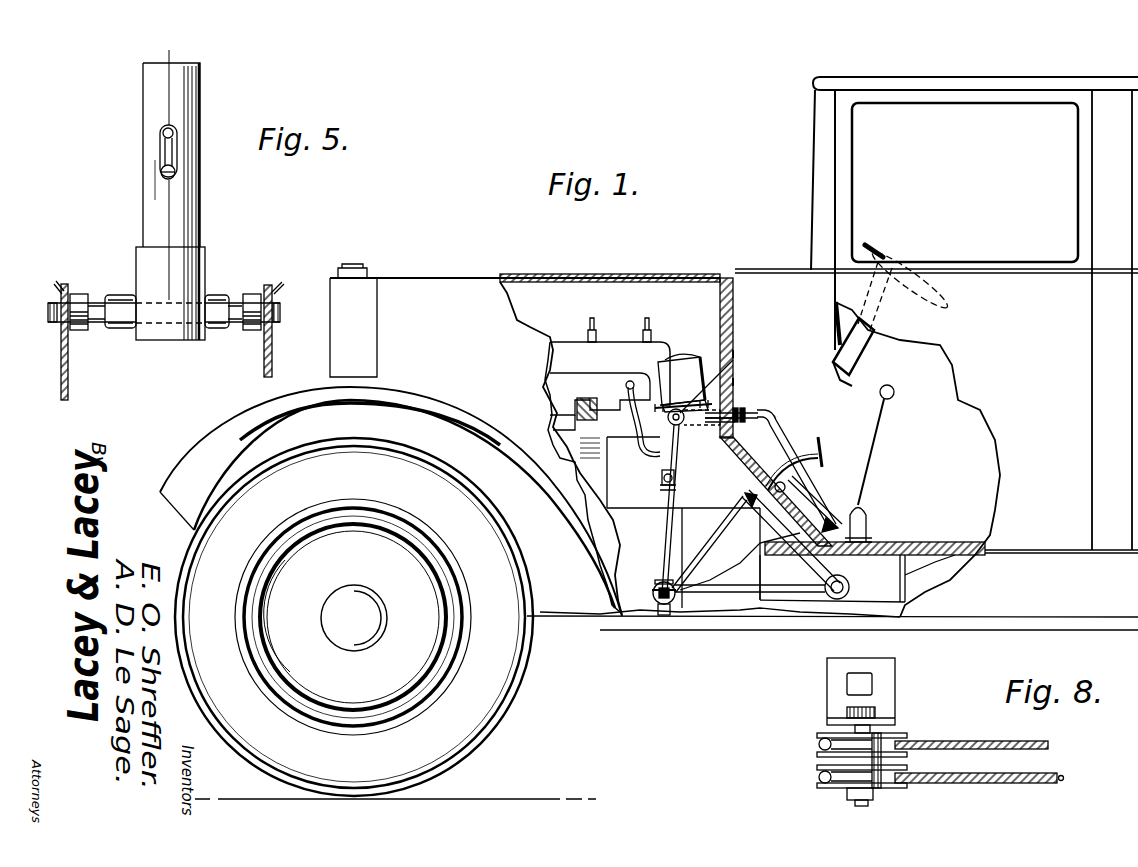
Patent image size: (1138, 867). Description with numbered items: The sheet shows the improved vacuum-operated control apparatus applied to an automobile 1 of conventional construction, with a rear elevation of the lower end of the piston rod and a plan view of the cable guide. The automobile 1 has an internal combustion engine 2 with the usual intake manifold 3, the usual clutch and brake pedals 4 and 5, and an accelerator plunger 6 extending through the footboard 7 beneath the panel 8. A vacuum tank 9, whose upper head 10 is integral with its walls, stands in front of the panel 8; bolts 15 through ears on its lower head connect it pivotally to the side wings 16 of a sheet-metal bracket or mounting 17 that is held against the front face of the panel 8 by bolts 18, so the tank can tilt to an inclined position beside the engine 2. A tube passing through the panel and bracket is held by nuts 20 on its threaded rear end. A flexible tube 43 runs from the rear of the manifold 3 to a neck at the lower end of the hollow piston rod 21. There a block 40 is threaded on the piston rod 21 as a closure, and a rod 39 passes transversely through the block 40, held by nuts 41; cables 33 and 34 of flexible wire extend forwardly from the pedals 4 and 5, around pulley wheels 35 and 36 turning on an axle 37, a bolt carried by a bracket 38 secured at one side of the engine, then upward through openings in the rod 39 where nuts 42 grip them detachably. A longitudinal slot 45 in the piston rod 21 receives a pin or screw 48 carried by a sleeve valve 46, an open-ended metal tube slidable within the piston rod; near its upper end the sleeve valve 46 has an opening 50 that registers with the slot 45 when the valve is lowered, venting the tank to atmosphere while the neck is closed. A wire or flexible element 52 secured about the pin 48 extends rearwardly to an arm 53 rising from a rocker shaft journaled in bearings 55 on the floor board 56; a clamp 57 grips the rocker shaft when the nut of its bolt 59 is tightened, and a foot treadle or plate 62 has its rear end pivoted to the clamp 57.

In FIG. 1, the automobile 1 is at (845, 205).
In FIG. 1, the internal combustion engine 2 is at (563, 352).
In FIG. 1, the intake manifold 3 is at (597, 378).
In FIG. 1, the clutch pedal 4 is at (789, 460).
In FIG. 1, the brake pedal 5 is at (816, 450).
In FIG. 1, the accelerator plunger 6 is at (762, 528).
In FIG. 1, the footboard 7 is at (776, 484).
In FIG. 1, the panel 8 is at (735, 313).
In FIG. 1, the vacuum tank 9 is at (688, 368).
In FIG. 1, the head 10 is at (676, 357).
In FIG. 1, the bolts 15 is at (682, 425).
In FIG. 1, the side wings 16 is at (685, 394).
In FIG. 1, the bracket 17 is at (736, 354).
In FIG. 1, the bolts 18 is at (734, 381).
In FIG. 1, the nuts 20 is at (742, 410).
In FIG. 5, the piston rod 21 is at (198, 75).
In FIG. 1, the piston rod 21 is at (668, 455).
In FIG. 5, the cable 33 is at (68, 390).
In FIG. 1, the cable 33 is at (712, 548).
In FIG. 8, the cable 33 is at (1015, 784).
In FIG. 5, the cable 34 is at (272, 362).
In FIG. 1, the cable 34 is at (758, 578).
In FIG. 8, the cable 34 is at (985, 742).
In FIG. 1, the pulley wheel 35 is at (655, 586).
In FIG. 8, the pulley wheel 35 is at (890, 788).
In FIG. 8, the pulley wheel 36 is at (900, 735).
In FIG. 1, the axle 37 is at (660, 600).
In FIG. 8, the axle 37 is at (878, 712).
In FIG. 1, the bracket 38 is at (668, 606).
In FIG. 8, the bracket 38 is at (893, 676).
In FIG. 5, the rod 39 is at (278, 305).
In FIG. 1, the rod 39 is at (664, 482).
In FIG. 5, the block 40 is at (183, 262).
In FIG. 1, the block 40 is at (675, 478).
In FIG. 5, the nuts 41 is at (120, 330).
In FIG. 5, the nuts 42 is at (80, 293).
In FIG. 1, the nuts 42 is at (687, 498).
In FIG. 1, the flexible tube 43 is at (636, 435).
In FIG. 5, the slot 45 is at (162, 150).
In FIG. 5, the sleeve valve 46 is at (176, 150).
In FIG. 5, the pin 48 is at (175, 176).
In FIG. 5, the opening 50 is at (172, 130).
In FIG. 1, the wire 52 is at (748, 412).
In FIG. 1, the arm 53 is at (733, 455).
In FIG. 1, the bearings 55 is at (870, 535).
In FIG. 1, the floor board 56 is at (968, 543).
In FIG. 1, the clamp 57 is at (855, 557).
In FIG. 1, the bolt 59 is at (826, 590).
In FIG. 1, the foot treadle 62 is at (824, 510).